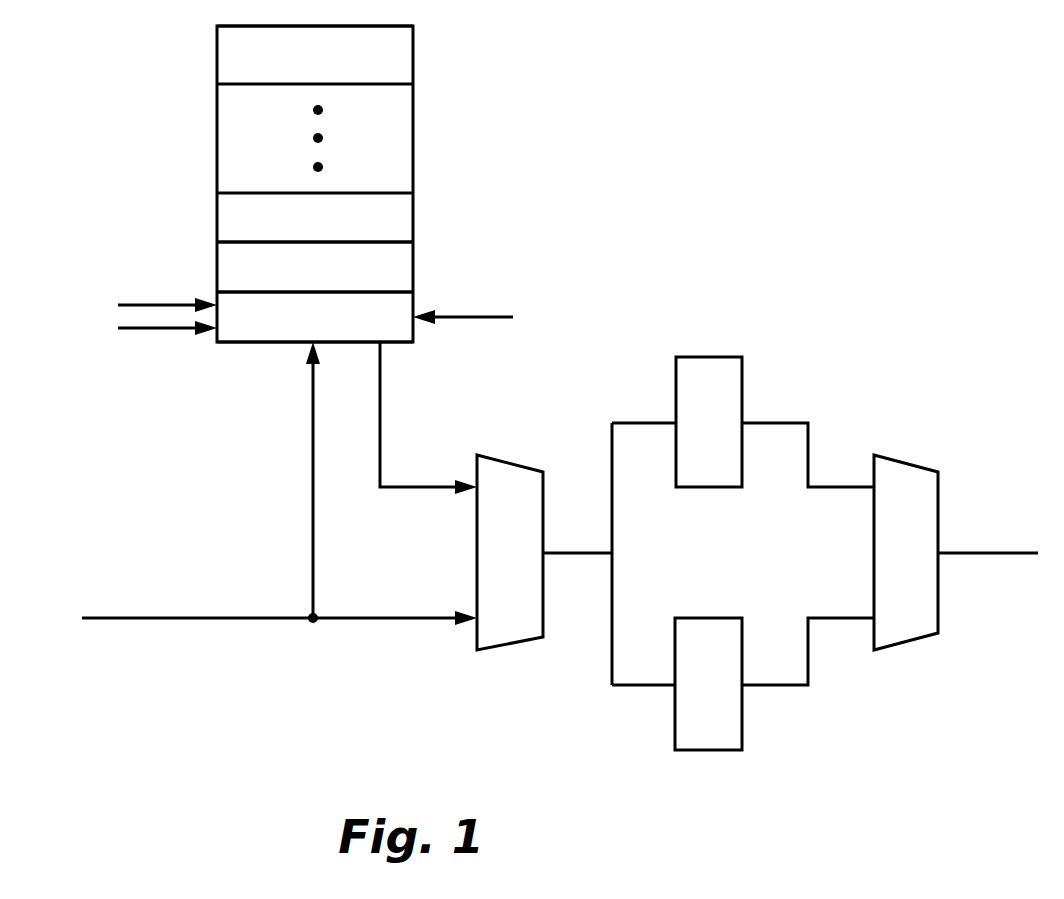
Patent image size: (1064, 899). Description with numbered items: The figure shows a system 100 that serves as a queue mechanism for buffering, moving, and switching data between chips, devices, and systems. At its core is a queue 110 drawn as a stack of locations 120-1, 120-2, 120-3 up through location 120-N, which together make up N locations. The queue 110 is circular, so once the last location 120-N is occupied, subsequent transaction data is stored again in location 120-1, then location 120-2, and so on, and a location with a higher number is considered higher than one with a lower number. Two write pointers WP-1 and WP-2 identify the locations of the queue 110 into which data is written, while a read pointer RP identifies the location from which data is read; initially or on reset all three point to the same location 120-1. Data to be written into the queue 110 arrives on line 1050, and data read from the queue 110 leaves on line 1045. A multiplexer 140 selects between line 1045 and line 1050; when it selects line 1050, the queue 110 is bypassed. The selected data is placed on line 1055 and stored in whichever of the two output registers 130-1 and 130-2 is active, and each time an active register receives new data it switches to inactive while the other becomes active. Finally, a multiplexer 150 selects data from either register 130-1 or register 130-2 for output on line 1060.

The system 100 is at (171, 737).
The queue 110 is at (275, 184).
The location 120-N is at (315, 48).
The location 120-3 is at (315, 217).
The location 120-2 is at (315, 267).
The location 120-1 is at (315, 317).
The write pointer WP-1 is at (127, 303).
The write pointer WP-2 is at (130, 330).
The read pointer RP is at (465, 329).
The line 1045 is at (434, 487).
The line 1050 is at (145, 622).
The multiplexer 140 is at (508, 650).
The line 1055 is at (580, 553).
The output register 130-1 is at (717, 357).
The output register 130-2 is at (705, 750).
The multiplexer 150 is at (905, 650).
The line 1060 is at (971, 553).